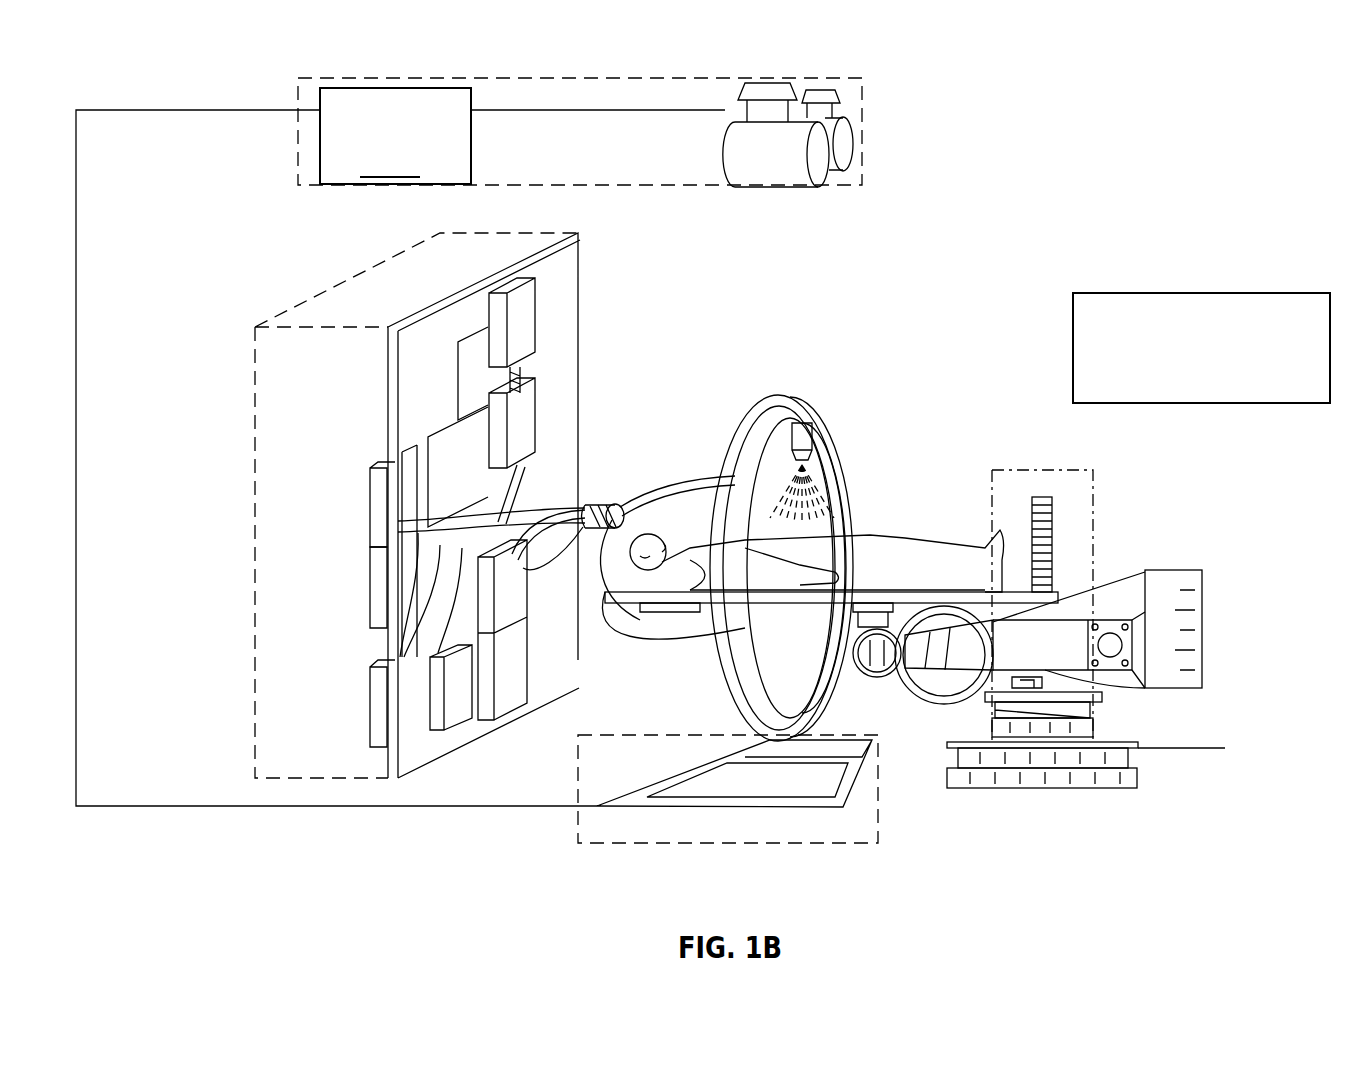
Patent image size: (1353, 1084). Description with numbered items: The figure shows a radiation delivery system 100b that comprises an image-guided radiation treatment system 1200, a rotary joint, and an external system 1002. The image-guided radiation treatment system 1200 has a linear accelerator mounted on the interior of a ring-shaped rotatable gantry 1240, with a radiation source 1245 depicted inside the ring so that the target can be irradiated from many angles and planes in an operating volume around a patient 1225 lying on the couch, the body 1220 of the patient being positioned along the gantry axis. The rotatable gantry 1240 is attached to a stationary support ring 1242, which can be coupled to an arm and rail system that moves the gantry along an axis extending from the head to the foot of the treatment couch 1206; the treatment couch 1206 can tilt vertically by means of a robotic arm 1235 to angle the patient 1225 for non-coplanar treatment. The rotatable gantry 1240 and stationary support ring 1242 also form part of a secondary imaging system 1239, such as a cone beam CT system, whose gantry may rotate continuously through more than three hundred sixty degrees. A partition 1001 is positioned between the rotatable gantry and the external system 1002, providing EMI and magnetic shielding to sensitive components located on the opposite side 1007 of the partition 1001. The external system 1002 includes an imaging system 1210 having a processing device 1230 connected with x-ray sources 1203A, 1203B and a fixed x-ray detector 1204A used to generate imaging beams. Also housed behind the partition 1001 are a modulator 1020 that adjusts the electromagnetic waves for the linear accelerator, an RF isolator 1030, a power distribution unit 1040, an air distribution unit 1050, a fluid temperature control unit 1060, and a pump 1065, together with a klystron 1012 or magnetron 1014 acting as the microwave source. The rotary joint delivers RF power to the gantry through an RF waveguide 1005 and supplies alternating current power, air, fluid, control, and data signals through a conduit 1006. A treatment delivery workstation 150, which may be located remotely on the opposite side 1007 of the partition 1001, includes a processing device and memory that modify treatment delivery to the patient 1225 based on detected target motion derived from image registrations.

The radiation delivery system 100b is at (156, 80).
The image-guided radiation treatment (IGRT) system 1200 is at (1247, 107).
The imaging system 1210 is at (866, 76).
The processing device 1230 is at (450, 422).
The x-ray source 1203A is at (782, 200).
The x-ray source 1203B is at (852, 140).
The treatment delivery workstation 150 is at (1200, 393).
The external system 1002 is at (303, 302).
The partition 1001 is at (580, 263).
The RF isolator 1030 is at (518, 318).
The modulator 1020 is at (518, 403).
The fluid temperature control unit 1060 is at (372, 512).
The pump 1065 is at (375, 588).
The air distribution unit 1050 is at (370, 690).
The power distribution unit 1040 is at (433, 708).
The magnetron 1014 is at (498, 703).
The opposite side 1007 is at (410, 752).
The klystron 1012 is at (568, 500).
The rotatable gantry 1240 is at (800, 403).
The stationary support ring 1242 is at (737, 420).
The radiation source 1245 is at (813, 443).
The RF waveguide 1005 is at (697, 496).
The patient 1220 is at (833, 567).
The patient 1225 is at (643, 543).
The treatment couch 1206 is at (685, 627).
The conduit 1006 is at (707, 630).
The secondary imaging system 1239 is at (912, 446).
The robotic arm 1235 is at (1132, 572).
The fixed x-ray detector 1204A is at (862, 792).